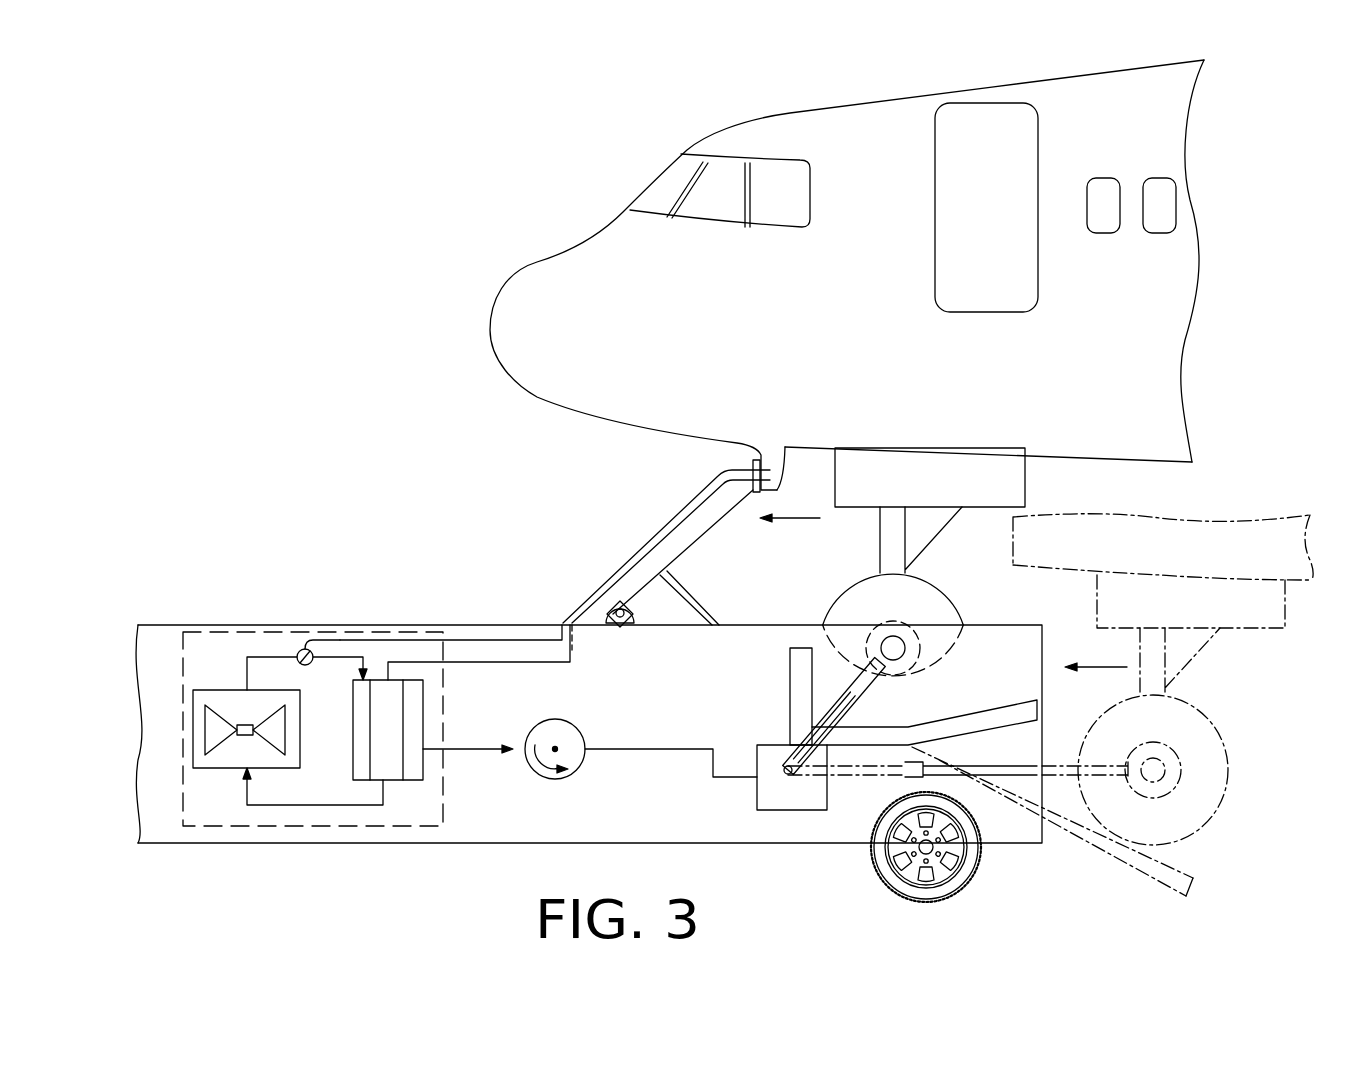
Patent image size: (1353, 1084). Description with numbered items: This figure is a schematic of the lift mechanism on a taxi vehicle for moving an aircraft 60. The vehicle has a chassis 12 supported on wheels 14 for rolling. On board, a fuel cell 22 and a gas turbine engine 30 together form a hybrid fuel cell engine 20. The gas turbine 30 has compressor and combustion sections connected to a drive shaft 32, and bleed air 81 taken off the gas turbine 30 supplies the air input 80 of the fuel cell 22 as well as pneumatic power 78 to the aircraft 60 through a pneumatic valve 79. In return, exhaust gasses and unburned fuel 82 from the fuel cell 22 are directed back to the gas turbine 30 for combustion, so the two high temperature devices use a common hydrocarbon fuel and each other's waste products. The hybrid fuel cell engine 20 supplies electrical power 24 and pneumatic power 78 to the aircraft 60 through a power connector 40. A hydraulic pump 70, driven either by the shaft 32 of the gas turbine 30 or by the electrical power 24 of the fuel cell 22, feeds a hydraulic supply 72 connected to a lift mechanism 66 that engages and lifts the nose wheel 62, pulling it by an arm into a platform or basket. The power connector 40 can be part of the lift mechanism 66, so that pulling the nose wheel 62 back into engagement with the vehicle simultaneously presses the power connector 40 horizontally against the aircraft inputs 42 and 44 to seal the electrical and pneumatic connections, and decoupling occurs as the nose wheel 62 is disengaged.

The aircraft 60 is at (697, 143).
The aircraft electrical input 42 is at (836, 442).
The aircraft pneumatic input 44 is at (778, 430).
The power connector 40 is at (672, 484).
The nose wheel 62 is at (930, 583).
The chassis 12 is at (497, 844).
The wheels 14 is at (884, 863).
The hybrid fuel cell engine 20 is at (220, 632).
The gas turbine engine 30 is at (196, 735).
The drive shaft 32 is at (245, 737).
The fuel cell 22 is at (400, 781).
The bleed air 81 is at (260, 656).
The pneumatic valve 79 is at (302, 648).
The air input 80 is at (342, 655).
The pneumatic power 78 is at (418, 640).
The electrical power 24 is at (500, 662).
The exhaust gasses and unburned fuel 82 is at (312, 806).
The hydraulic pump 70 is at (576, 777).
The hydraulic supply 72 is at (616, 750).
The lift mechanism 66 is at (777, 811).